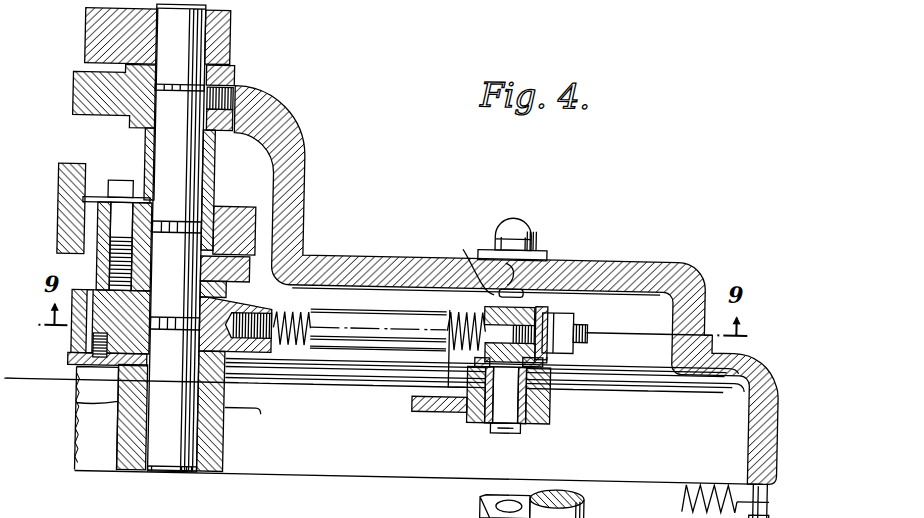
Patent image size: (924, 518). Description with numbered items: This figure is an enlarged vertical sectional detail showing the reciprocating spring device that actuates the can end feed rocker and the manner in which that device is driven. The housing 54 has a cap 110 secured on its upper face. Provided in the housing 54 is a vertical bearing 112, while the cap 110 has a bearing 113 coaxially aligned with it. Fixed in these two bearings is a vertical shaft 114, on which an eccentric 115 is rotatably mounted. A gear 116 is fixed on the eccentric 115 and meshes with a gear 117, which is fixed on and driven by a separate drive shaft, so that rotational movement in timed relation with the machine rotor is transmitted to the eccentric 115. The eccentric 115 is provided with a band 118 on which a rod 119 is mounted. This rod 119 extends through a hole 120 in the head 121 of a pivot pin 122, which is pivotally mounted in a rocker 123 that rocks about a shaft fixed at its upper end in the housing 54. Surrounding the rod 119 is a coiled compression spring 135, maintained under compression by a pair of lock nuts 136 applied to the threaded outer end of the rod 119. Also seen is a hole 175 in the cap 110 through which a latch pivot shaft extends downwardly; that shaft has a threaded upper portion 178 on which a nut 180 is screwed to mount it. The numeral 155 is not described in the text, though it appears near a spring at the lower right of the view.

The housing 54 is at (765, 367).
The cap 110 is at (653, 264).
The vertical bearing 112 is at (214, 446).
The bearing 113 is at (218, 36).
The vertical shaft 114 is at (181, 470).
The eccentric 115 is at (254, 266).
The gear 116 is at (250, 213).
The gear 117 is at (77, 178).
The band 118 is at (70, 363).
The rod 119 is at (363, 336).
The hole 120 is at (453, 331).
The head 121 is at (525, 311).
The pivot pin 122 is at (507, 408).
The rocker 123 is at (553, 418).
The coiled compression spring 135 is at (298, 348).
The lock nuts 136 is at (562, 349).
The spring rod 155 is at (773, 503).
The hole 175 is at (528, 251).
The threaded upper portion 178 is at (476, 267).
The nut 180 is at (525, 224).